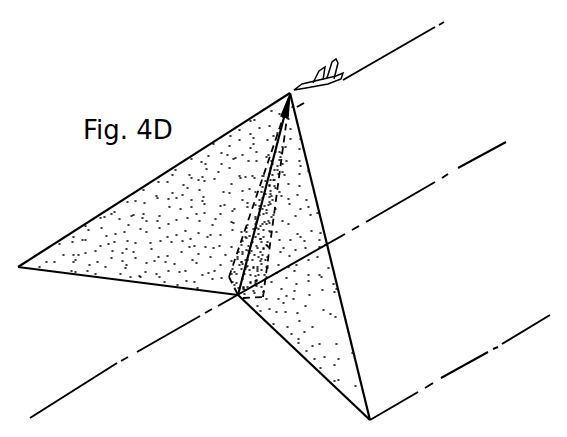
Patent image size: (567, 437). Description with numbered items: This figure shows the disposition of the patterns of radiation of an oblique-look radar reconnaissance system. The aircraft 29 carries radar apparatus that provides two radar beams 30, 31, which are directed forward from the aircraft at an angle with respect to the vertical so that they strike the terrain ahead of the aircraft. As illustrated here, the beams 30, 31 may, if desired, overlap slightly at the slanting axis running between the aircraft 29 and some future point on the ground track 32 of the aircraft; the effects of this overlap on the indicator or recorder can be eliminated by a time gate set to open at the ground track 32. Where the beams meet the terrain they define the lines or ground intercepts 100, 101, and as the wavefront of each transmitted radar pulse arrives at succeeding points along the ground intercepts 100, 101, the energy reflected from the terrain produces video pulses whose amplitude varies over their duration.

The aircraft 29 is at (303, 78).
The radar beam 30 is at (297, 155).
The radar beam 31 is at (133, 197).
The ground track 32 is at (387, 211).
The ground intercept 100 is at (143, 286).
The ground intercept 101 is at (318, 370).